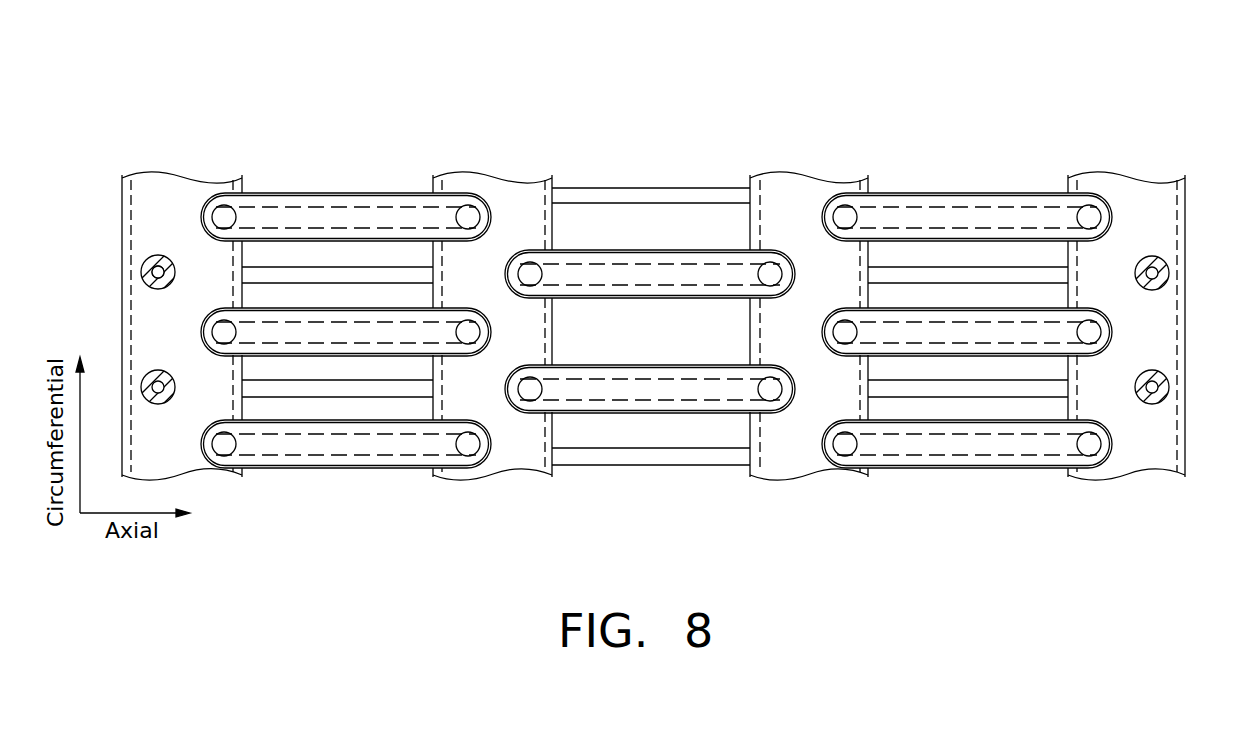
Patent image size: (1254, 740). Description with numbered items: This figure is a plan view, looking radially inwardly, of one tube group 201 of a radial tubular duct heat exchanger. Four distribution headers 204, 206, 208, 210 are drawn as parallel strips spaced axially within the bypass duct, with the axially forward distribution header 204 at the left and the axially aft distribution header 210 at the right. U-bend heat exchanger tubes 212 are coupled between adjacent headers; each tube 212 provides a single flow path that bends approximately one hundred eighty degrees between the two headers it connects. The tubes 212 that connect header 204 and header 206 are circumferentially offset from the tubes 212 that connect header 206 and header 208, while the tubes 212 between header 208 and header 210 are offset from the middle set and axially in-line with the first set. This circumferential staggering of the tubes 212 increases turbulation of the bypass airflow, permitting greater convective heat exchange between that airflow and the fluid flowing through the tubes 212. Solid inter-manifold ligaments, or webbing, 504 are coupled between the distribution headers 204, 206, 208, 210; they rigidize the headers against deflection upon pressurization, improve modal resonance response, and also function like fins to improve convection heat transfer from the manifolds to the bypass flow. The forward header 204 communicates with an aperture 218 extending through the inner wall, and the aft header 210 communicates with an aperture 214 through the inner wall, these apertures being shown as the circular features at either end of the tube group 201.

The tube group 201 is at (785, 70).
The distribution header 204 is at (180, 177).
The distribution header 206 is at (495, 177).
The distribution header 208 is at (812, 177).
The distribution header 210 is at (1120, 178).
The U-bend heat exchanger tubes 212 is at (310, 242).
The aperture 214 is at (1152, 257).
The aperture 218 is at (150, 259).
The solid inter-manifold ligaments 504 is at (368, 266).